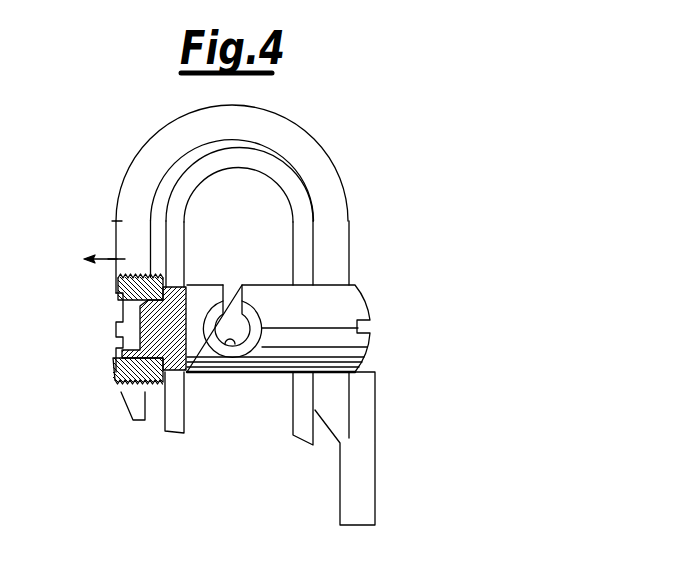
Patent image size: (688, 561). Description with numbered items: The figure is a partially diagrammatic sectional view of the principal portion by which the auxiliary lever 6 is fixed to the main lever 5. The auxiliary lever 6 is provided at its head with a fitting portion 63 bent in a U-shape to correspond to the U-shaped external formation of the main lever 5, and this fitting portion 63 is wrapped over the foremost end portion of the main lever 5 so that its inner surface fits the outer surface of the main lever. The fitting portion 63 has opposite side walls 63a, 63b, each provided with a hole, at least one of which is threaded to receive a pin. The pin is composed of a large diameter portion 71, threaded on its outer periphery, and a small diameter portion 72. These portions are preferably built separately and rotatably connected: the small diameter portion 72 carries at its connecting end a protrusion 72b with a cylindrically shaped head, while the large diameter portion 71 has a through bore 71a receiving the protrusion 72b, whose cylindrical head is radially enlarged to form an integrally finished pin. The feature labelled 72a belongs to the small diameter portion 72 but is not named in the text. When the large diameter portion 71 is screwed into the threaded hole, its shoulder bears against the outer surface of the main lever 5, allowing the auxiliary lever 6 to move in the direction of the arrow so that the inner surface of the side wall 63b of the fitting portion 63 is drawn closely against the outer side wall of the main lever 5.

The main lever 5 is at (300, 199).
The auxiliary lever 6 is at (372, 465).
The fitting portion 63 is at (299, 125).
The side wall 63a is at (114, 220).
The side wall 63b is at (342, 226).
The large diameter portion 71 is at (131, 387).
The through bore 71a is at (138, 398).
The small diameter portion 72 is at (272, 372).
The bore 72a is at (220, 358).
The protrusion 72b is at (122, 355).